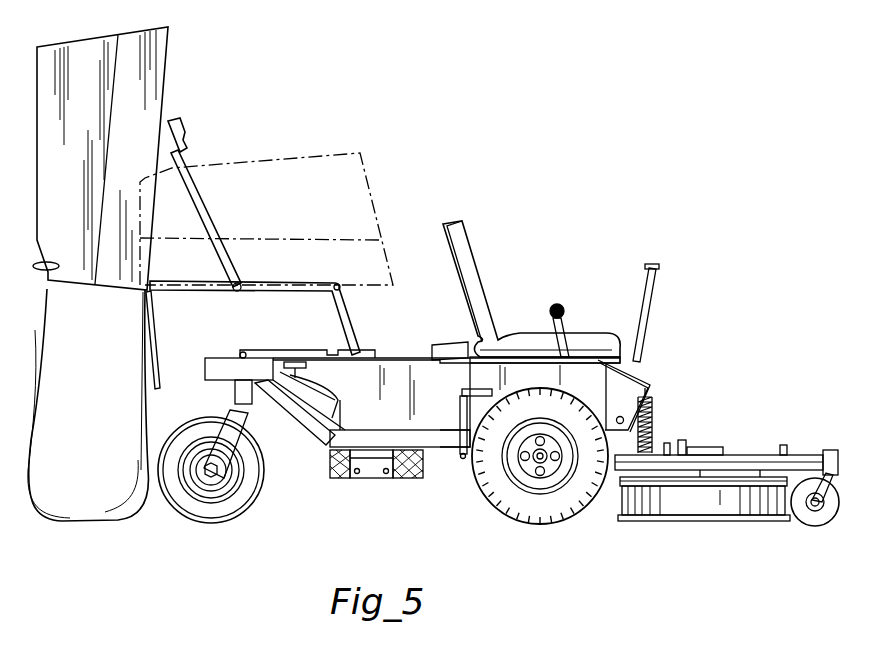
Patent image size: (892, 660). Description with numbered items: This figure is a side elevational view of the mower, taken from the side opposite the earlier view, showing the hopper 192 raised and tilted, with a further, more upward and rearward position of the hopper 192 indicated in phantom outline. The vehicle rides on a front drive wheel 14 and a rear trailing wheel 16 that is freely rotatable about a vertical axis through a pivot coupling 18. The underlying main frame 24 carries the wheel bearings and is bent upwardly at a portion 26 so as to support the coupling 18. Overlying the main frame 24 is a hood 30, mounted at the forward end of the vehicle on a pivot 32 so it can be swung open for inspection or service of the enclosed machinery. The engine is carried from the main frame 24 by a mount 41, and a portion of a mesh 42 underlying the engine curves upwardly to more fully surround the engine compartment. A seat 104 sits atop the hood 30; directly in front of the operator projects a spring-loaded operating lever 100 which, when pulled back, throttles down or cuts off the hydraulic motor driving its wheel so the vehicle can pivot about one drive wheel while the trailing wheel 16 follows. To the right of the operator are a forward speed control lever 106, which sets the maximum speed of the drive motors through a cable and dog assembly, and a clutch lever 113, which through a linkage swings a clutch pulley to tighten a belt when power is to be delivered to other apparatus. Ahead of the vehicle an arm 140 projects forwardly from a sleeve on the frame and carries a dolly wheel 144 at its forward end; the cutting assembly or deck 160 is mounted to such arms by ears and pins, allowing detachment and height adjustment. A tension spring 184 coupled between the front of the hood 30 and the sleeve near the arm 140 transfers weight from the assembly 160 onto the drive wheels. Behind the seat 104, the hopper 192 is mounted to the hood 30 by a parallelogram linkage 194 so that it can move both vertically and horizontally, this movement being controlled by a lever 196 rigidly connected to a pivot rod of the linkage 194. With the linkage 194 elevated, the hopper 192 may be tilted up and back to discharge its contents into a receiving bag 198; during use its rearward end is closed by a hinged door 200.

The hopper 192 is at (166, 62).
The lever 196 is at (182, 122).
The parallelogram linkage 194 is at (362, 328).
The hinged door 200 is at (157, 346).
The receiving bag 198 is at (102, 520).
The hood 30 is at (380, 396).
The upwardly bent portion of main frame 26 is at (315, 445).
The pivot coupling 18 is at (235, 393).
The trailing wheel 16 is at (230, 522).
The mount 41 is at (372, 480).
The mesh 42 is at (408, 480).
The main frame 24 is at (462, 452).
The clutch lever 113 is at (478, 390).
The seat 104 is at (510, 338).
The forward speed control lever 106 is at (566, 312).
The operating lever 100 is at (650, 318).
The pivot 32 is at (619, 396).
The drive wheel 14 is at (530, 530).
The tension spring 184 is at (650, 428).
The arm 140 is at (796, 458).
The cutting assembly 160 is at (684, 522).
The dolly wheel 144 is at (808, 524).